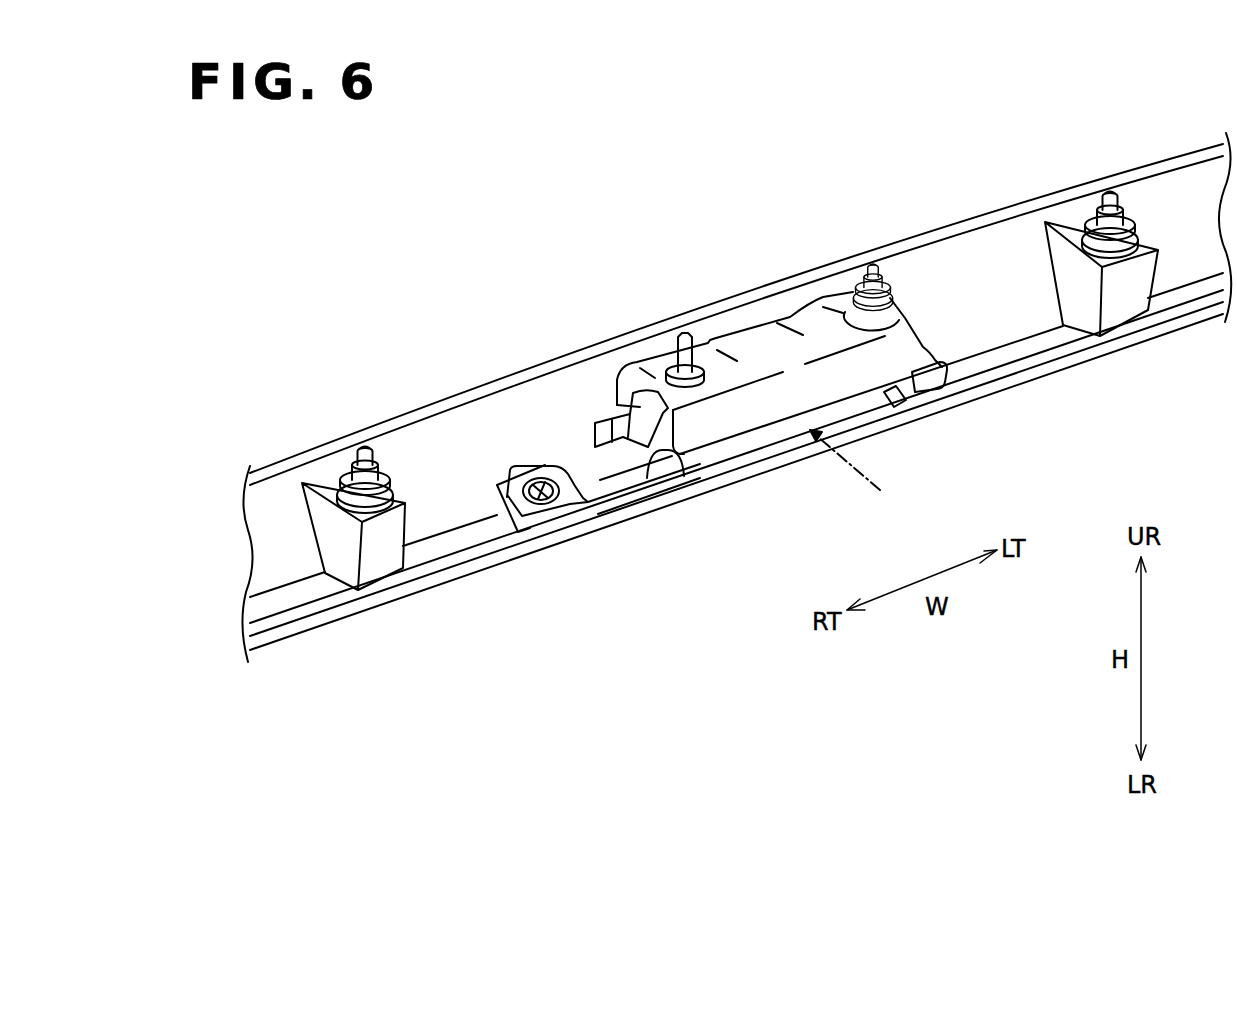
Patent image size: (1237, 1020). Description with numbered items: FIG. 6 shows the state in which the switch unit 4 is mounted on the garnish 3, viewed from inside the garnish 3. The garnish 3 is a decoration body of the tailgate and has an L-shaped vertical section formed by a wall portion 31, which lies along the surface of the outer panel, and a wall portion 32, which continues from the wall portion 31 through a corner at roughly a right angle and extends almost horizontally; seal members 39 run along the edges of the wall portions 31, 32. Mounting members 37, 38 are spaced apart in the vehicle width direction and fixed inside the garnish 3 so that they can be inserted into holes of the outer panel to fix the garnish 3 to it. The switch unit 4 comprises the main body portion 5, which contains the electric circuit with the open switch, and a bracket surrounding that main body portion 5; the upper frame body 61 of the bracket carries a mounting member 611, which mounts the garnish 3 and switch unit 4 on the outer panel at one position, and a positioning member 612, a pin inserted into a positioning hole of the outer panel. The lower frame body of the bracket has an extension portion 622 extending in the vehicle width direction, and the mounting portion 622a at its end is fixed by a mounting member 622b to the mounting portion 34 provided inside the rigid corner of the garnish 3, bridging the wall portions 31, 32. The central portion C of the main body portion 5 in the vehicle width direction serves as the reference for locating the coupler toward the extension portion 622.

The garnish 3 is at (631, 307).
The switch unit 4 is at (914, 272).
The main body portion 5 is at (910, 408).
The wall portion 31 is at (524, 420).
The wall portion 32 is at (455, 537).
The mounting portion 34 is at (510, 482).
The mounting member 37 is at (1096, 190).
The mounting member 38 is at (355, 453).
The seal member 39 is at (412, 418).
The upper frame body 61 is at (756, 327).
The mounting member 611 is at (870, 260).
The positioning member 612 is at (685, 322).
The extension portion 622 is at (623, 490).
The mounting portion 622a is at (555, 468).
The mounting member 622b is at (556, 512).
The central portion C is at (851, 473).